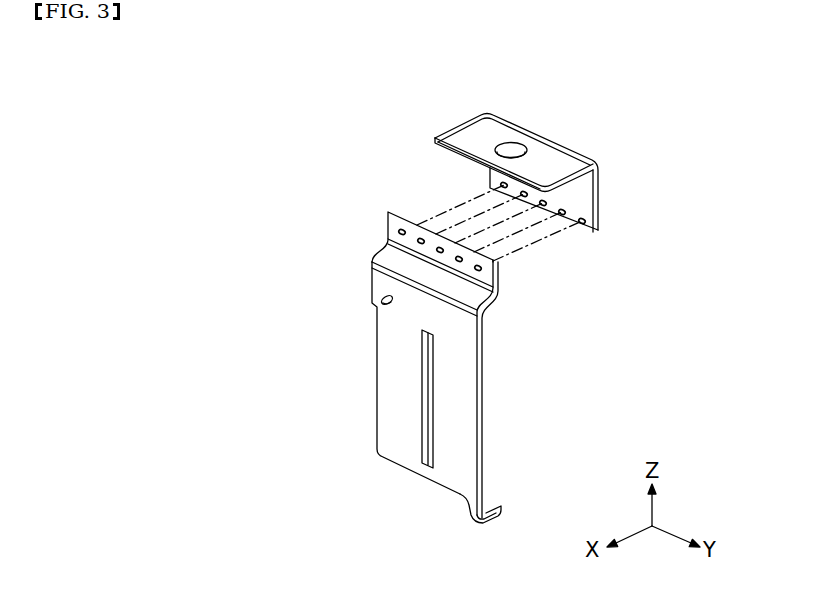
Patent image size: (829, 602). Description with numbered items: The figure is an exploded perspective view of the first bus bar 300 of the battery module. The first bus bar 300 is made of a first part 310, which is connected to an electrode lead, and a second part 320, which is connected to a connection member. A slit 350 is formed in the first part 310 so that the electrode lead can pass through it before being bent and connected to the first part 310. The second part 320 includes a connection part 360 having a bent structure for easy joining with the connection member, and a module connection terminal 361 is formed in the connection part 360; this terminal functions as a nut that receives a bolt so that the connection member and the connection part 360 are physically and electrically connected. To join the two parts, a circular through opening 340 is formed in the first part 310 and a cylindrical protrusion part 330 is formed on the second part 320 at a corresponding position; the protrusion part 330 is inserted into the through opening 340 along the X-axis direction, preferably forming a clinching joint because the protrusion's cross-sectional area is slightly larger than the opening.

The first bus bar 300 is at (683, 248).
The first part 310 is at (478, 347).
The second part 320 is at (598, 230).
The protrusion part 330 is at (580, 224).
The through opening 340 is at (398, 232).
The slit 350 is at (422, 393).
The connection part 360 is at (467, 130).
The module connection terminal 361 is at (512, 147).